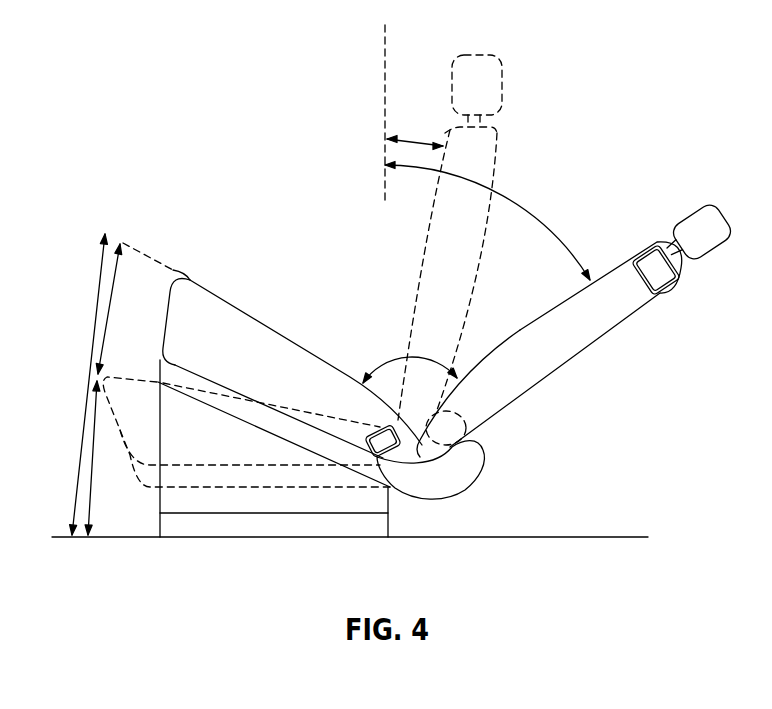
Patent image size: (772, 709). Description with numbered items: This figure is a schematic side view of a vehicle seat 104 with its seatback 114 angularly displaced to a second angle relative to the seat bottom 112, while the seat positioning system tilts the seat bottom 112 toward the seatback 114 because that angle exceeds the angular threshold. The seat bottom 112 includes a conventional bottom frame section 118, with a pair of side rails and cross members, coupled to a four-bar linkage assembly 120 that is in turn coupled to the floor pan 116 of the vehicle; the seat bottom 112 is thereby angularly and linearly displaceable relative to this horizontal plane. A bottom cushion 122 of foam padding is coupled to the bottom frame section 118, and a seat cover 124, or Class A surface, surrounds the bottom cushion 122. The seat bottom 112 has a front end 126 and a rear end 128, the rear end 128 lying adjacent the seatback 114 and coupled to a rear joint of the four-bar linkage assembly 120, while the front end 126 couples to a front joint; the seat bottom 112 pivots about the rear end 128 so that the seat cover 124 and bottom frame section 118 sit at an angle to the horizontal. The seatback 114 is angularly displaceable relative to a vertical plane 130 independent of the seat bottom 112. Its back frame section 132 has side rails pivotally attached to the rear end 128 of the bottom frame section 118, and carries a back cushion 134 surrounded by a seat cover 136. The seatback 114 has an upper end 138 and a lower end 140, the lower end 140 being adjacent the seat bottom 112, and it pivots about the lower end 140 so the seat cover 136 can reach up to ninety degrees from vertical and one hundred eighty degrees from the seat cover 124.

The vehicle seat 104 is at (238, 148).
The seat bottom 112 is at (182, 277).
The seatback 114 is at (556, 356).
The floor pan 116 is at (606, 537).
The bottom frame section 118 is at (422, 496).
The four-bar linkage assembly 120 is at (157, 500).
The bottom cushion 122 is at (283, 333).
The seat cover 124 is at (260, 322).
The front end 126 is at (217, 296).
The rear end 128 is at (453, 490).
The vertical plane 130 is at (380, 43).
The back frame section 132 is at (640, 250).
The back cushion 134 is at (590, 341).
The seat cover 136 is at (563, 300).
The upper end 138 is at (680, 267).
The lower end 140 is at (475, 455).